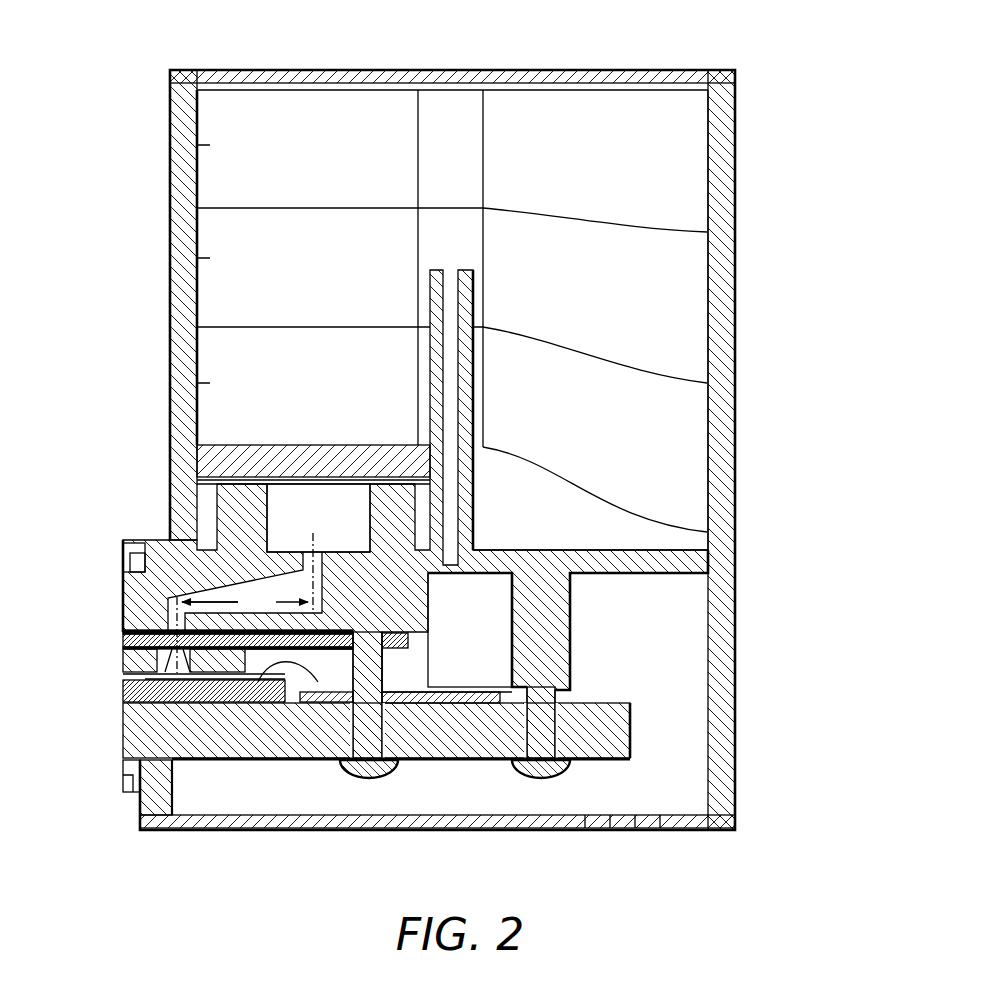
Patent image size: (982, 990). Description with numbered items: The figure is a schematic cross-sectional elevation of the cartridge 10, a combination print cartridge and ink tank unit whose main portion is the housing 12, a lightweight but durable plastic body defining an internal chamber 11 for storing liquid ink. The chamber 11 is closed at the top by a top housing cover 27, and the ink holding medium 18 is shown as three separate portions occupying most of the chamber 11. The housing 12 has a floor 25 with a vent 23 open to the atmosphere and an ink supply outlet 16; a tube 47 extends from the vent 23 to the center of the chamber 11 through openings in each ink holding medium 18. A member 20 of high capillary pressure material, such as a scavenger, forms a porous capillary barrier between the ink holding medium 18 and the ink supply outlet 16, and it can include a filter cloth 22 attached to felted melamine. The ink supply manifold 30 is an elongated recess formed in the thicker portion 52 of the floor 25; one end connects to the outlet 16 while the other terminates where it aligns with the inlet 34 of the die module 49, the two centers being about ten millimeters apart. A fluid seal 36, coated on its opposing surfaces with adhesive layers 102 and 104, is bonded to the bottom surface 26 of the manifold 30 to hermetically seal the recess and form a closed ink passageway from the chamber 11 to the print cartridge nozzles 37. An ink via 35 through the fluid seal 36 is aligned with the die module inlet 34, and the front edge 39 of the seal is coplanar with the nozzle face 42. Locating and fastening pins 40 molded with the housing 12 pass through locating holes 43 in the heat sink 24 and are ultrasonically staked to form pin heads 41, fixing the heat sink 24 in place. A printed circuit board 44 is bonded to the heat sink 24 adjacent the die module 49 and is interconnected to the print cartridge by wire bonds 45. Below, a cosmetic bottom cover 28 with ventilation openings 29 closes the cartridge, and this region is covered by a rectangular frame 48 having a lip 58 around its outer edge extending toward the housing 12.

The cartridge 10 is at (590, 32).
The internal chamber 11 is at (697, 168).
The housing 12 is at (736, 330).
The ink supply outlet 16 is at (318, 545).
The ink holding medium 18 is at (205, 145).
The member 20 is at (200, 452).
The filter cloth 22 is at (200, 481).
The vent 23 is at (450, 573).
The heat sink 24 is at (632, 738).
The floor 25 is at (598, 573).
The bottom surface 26 is at (406, 640).
The top housing cover 27 is at (328, 70).
The cosmetic bottom cover 28 is at (488, 830).
The ventilation openings 29 is at (660, 830).
The ink supply manifold 30 is at (285, 585).
The die module inlet 34 is at (150, 632).
The ink via 35 is at (170, 655).
The fluid seal 36 is at (400, 655).
The print cartridge nozzles 37 is at (140, 662).
The front edge 39 is at (150, 641).
The locating and fastening pins 40 is at (572, 634).
The pin heads 41 is at (362, 773).
The nozzle face 42 is at (135, 690).
The locating holes 43 is at (410, 740).
The printed circuit board 44 is at (473, 695).
The wire bonds 45 is at (275, 698).
The tube 47 is at (473, 495).
The frame 48 is at (125, 768).
The die module 49 is at (455, 110).
The thicker portion 52 is at (428, 598).
The lip 58 is at (130, 792).
The adhesive layer 102 is at (308, 667).
The adhesive layer 104 is at (123, 606).